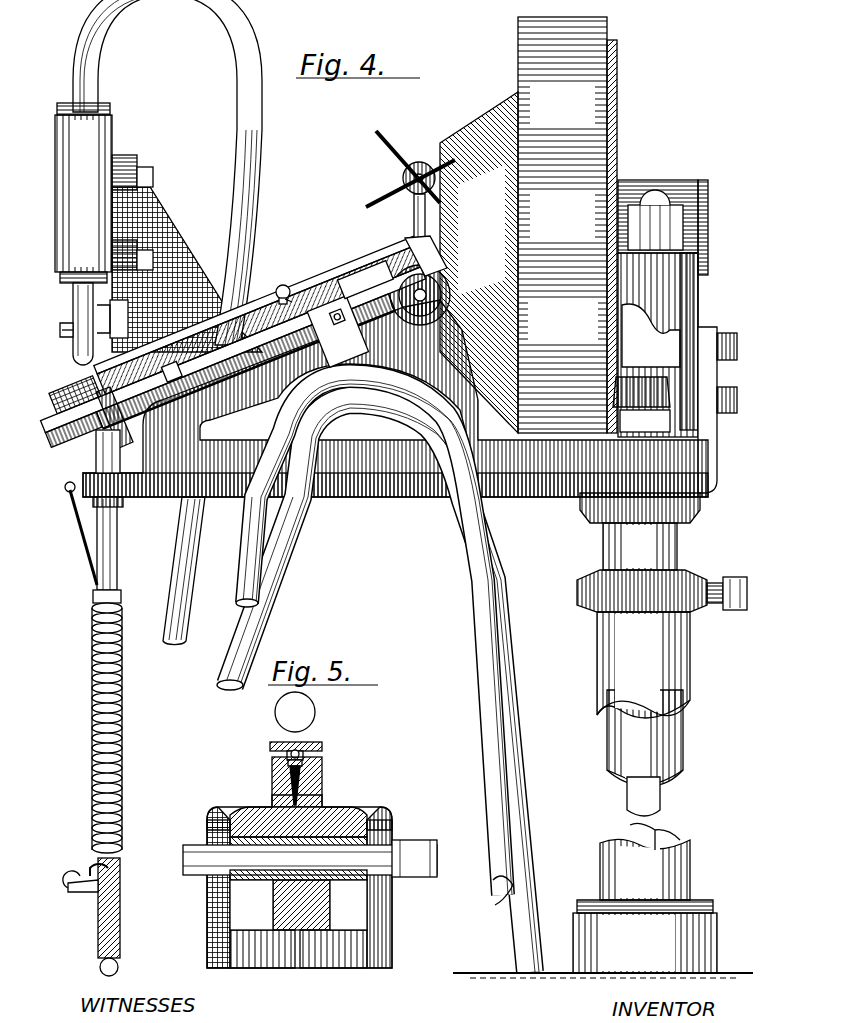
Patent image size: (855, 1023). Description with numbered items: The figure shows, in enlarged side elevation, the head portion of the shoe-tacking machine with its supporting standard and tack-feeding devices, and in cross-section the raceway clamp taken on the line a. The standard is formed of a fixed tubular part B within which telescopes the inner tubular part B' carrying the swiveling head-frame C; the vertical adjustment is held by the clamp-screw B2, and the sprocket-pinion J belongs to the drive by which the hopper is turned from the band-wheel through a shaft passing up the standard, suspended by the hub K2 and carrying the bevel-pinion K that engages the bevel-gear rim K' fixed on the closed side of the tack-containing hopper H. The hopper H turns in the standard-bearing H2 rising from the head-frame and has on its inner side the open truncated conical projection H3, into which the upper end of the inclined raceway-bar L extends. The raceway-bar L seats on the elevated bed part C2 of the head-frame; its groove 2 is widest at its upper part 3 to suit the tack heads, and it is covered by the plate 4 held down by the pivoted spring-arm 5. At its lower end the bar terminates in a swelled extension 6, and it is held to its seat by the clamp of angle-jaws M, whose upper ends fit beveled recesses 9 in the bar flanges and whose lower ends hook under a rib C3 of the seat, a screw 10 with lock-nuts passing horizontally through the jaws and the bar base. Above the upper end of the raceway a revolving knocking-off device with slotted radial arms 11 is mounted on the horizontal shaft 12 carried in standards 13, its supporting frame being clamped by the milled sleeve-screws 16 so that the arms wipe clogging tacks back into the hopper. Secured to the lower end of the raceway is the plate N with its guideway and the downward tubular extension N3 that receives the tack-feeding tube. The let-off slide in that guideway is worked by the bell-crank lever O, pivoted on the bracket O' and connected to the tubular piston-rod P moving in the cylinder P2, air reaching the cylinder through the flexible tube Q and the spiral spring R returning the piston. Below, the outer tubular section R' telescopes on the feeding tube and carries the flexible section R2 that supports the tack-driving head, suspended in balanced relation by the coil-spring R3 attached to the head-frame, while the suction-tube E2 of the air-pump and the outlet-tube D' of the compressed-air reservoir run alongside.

In FIG. 4, the flexible tube Q is at (182, 557).
In FIG. 4, the cylinder P2 is at (104, 193).
In FIG. 4, the piston-rod P is at (74, 324).
In FIG. 4, the bell-crank lever O is at (50, 343).
In FIG. 4, the bracket O' is at (112, 336).
In FIG. 4, the swelled extension 6 is at (71, 386).
In FIG. 4, the irregularly-shaped plate N is at (242, 372).
In FIG. 4, the tubular extension N3 is at (106, 460).
In FIG. 4, the spiral spring R is at (99, 536).
In FIG. 4, the outer tubular metal section R' is at (118, 594).
In FIG. 4, the coil-spring R3 is at (112, 724).
In FIG. 4, the flexible tubular section R2 is at (103, 917).
In FIG. 4, the suction-tube E2 is at (367, 640).
In FIG. 4, the outlet-tube D' is at (380, 686).
In FIG. 4, the cover-plate 4 is at (255, 293).
In FIG. 5, the cover-plate 4 is at (305, 752).
In FIG. 4, the spring-arm 5 is at (289, 287).
In FIG. 5, the spring-arm 5 is at (270, 744).
In FIG. 4, the section line a is at (316, 280).
In FIG. 4, the screw 10 is at (344, 271).
In FIG. 5, the screw 10 is at (312, 858).
In FIG. 4, the raceway-bar L is at (266, 323).
In FIG. 5, the raceway-bar L is at (298, 811).
In FIG. 4, the angle-jaws M is at (342, 342).
In FIG. 5, the angle-jaws M is at (294, 876).
In FIG. 4, the elevated bed part C2 is at (247, 365).
In FIG. 4, the frame C is at (395, 381).
In FIG. 4, the radial arms 11 is at (410, 169).
In FIG. 4, the horizontal shaft 12 is at (419, 168).
In FIG. 4, the standards 13 is at (422, 235).
In FIG. 4, the sleeve-screws 16 is at (433, 315).
In FIG. 4, the truncated conical projection H3 is at (479, 262).
In FIG. 4, the tack-containing hopper H is at (562, 225).
In FIG. 4, the bevel-gear rim K' is at (622, 236).
In FIG. 4, the standard-bearing H2 is at (677, 336).
In FIG. 4, the bevel-pinion K is at (641, 381).
In FIG. 4, the hub K2 is at (645, 422).
In FIG. 4, the inner telescoping tubular part B' is at (641, 639).
In FIG. 4, the clamp-screw B2 is at (738, 593).
In FIG. 4, the fixed standard part B is at (645, 771).
In FIG. 4, the sprocket-pinion J is at (634, 796).
In FIG. 5, the beveled recesses 9 is at (299, 804).
In FIG. 5, the groove 2 is at (272, 782).
In FIG. 5, the upper part of groove 3 is at (303, 762).
In FIG. 5, the central block C3 is at (298, 900).